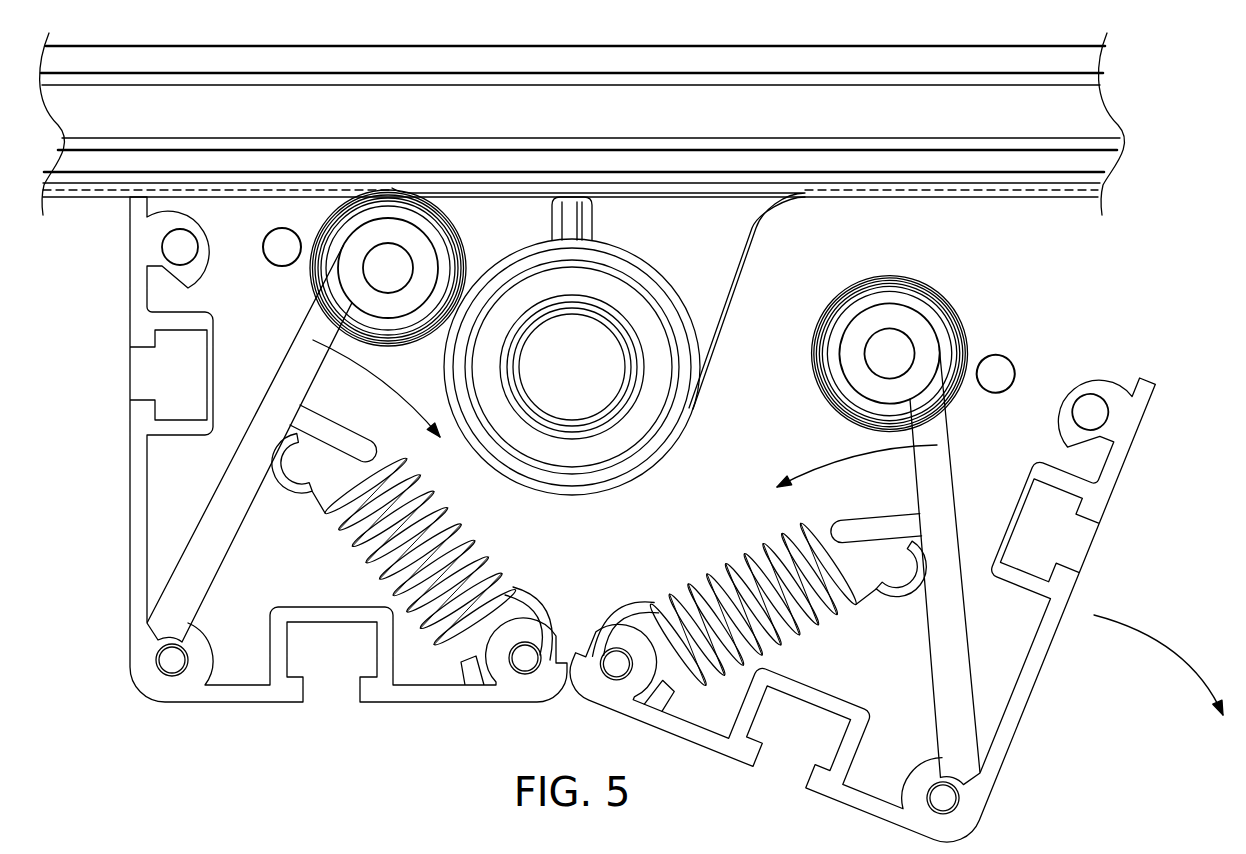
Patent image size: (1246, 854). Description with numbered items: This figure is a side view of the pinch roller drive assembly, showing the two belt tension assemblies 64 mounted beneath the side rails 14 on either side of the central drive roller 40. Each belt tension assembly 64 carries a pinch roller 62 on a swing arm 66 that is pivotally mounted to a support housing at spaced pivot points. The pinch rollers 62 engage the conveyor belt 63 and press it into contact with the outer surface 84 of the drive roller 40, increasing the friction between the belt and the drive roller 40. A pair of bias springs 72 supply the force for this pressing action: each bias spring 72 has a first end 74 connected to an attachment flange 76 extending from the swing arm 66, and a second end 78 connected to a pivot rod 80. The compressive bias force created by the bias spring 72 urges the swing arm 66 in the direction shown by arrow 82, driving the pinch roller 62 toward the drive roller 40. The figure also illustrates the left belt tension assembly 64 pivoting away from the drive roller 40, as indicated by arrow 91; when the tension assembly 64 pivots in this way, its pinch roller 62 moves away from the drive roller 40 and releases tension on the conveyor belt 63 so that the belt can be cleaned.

The side rail 14 is at (1082, 62).
The drive roller 40 is at (655, 452).
The pinch roller 62 is at (452, 232).
The conveyor belt 63 is at (727, 320).
The belt tension assembly 64 is at (200, 708).
The swing arm 66 is at (292, 362).
The bias spring 72 is at (467, 534).
The first end 74 is at (896, 588).
The attachment flange 76 is at (878, 527).
The second end 78 is at (663, 683).
The pivot rod 80 is at (606, 652).
The arrow 82 is at (383, 377).
The outer surface 84 is at (660, 276).
The arrow 91 is at (1163, 653).